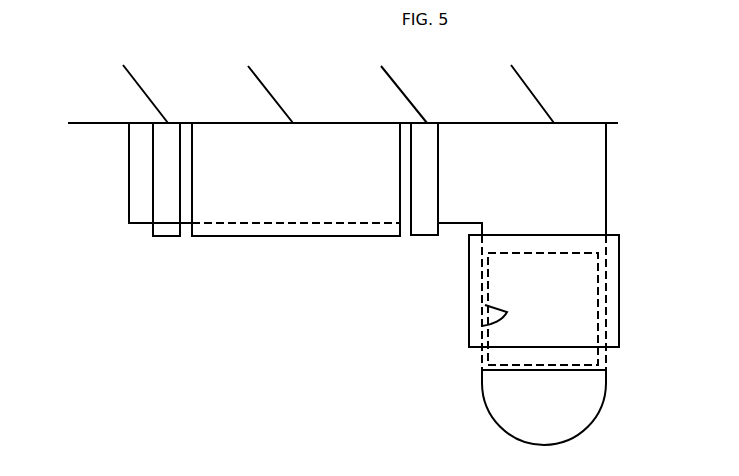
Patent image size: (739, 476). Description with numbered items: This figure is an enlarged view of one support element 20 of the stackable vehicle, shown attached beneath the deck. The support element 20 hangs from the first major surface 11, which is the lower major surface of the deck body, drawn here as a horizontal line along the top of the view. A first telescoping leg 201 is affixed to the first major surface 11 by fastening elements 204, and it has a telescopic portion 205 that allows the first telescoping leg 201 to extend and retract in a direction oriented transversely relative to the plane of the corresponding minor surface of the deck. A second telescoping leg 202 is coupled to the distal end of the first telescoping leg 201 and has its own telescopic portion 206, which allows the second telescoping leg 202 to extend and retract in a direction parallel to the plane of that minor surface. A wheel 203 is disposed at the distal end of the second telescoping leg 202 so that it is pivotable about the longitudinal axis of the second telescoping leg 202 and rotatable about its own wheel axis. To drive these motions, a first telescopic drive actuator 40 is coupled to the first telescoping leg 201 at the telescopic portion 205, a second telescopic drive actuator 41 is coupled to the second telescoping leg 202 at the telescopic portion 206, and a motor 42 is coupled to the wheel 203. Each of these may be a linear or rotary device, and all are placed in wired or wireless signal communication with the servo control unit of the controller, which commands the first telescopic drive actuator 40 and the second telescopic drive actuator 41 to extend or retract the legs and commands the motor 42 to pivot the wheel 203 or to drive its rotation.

The first major surface 11 is at (83, 123).
The support element 20 is at (584, 179).
The first telescoping leg 201 is at (130, 190).
The second telescoping leg 202 is at (606, 221).
The wheel 203 is at (598, 415).
The fastening elements 204 is at (153, 230).
The telescopic portion 205 is at (275, 222).
The telescopic portion 206 is at (485, 305).
The first telescopic drive actuator 40 is at (318, 236).
The second telescopic drive actuator 41 is at (619, 306).
The motor 42 is at (598, 358).